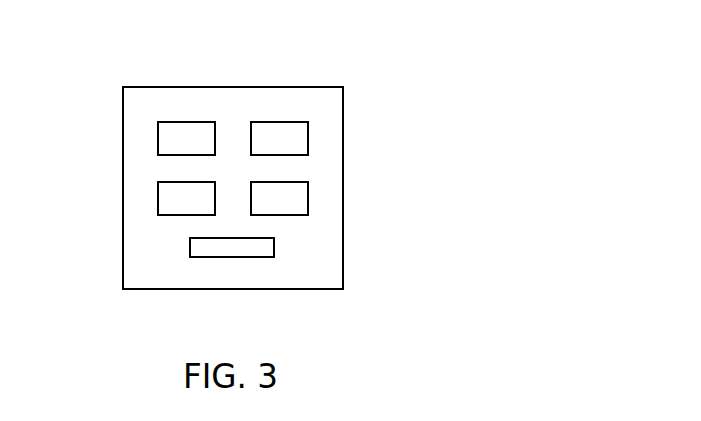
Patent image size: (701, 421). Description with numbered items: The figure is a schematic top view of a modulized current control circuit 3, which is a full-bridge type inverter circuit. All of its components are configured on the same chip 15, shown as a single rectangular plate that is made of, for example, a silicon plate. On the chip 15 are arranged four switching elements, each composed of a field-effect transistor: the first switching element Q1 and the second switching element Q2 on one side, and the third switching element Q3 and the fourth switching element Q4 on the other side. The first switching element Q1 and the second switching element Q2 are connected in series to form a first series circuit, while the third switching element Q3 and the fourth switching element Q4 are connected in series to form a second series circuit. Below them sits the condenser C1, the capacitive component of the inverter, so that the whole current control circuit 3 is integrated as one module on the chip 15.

The current control circuit 3 is at (328, 62).
The chip 15 is at (343, 251).
The first switching element Q1 is at (158, 140).
The second switching element Q2 is at (158, 200).
The third switching element Q3 is at (308, 140).
The fourth switching element Q4 is at (308, 200).
The condenser C1 is at (232, 257).